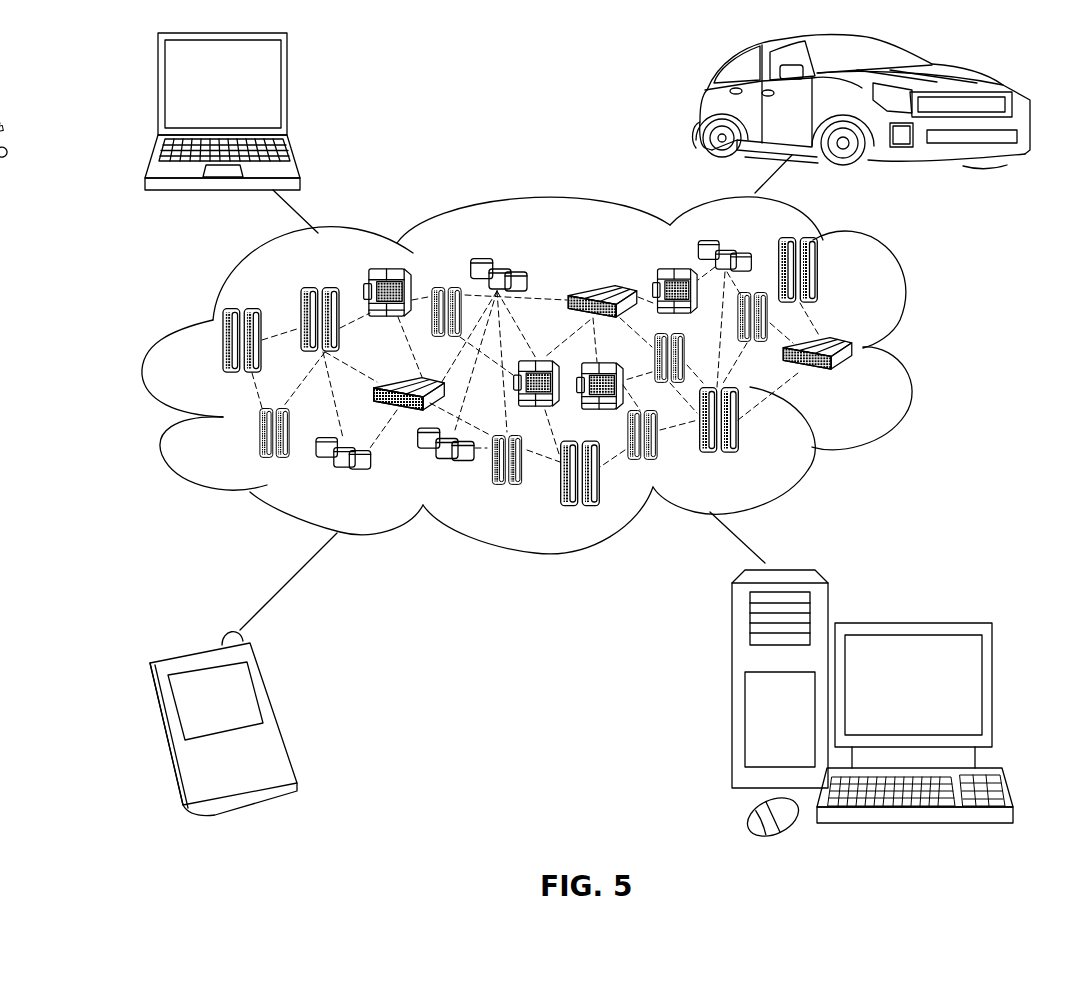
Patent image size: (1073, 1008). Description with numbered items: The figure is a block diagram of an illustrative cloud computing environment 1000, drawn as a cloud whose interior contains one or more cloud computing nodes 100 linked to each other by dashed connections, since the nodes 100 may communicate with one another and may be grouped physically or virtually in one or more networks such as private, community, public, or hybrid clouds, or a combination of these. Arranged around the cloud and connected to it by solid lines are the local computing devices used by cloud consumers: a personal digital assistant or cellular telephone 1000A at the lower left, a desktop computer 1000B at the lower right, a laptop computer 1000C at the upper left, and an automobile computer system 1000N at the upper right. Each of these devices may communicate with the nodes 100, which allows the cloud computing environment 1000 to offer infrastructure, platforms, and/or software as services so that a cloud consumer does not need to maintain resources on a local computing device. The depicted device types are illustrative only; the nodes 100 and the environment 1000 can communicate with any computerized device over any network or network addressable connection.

The laptop computer 1000C is at (289, 92).
The automobile computer system 1000N is at (702, 108).
The cloud computing environment 1000 is at (910, 350).
The cloud computing nodes 100 is at (869, 379).
The personal digital assistant (PDA) or cellular telephone 1000A is at (289, 713).
The desktop computer 1000B is at (915, 623).